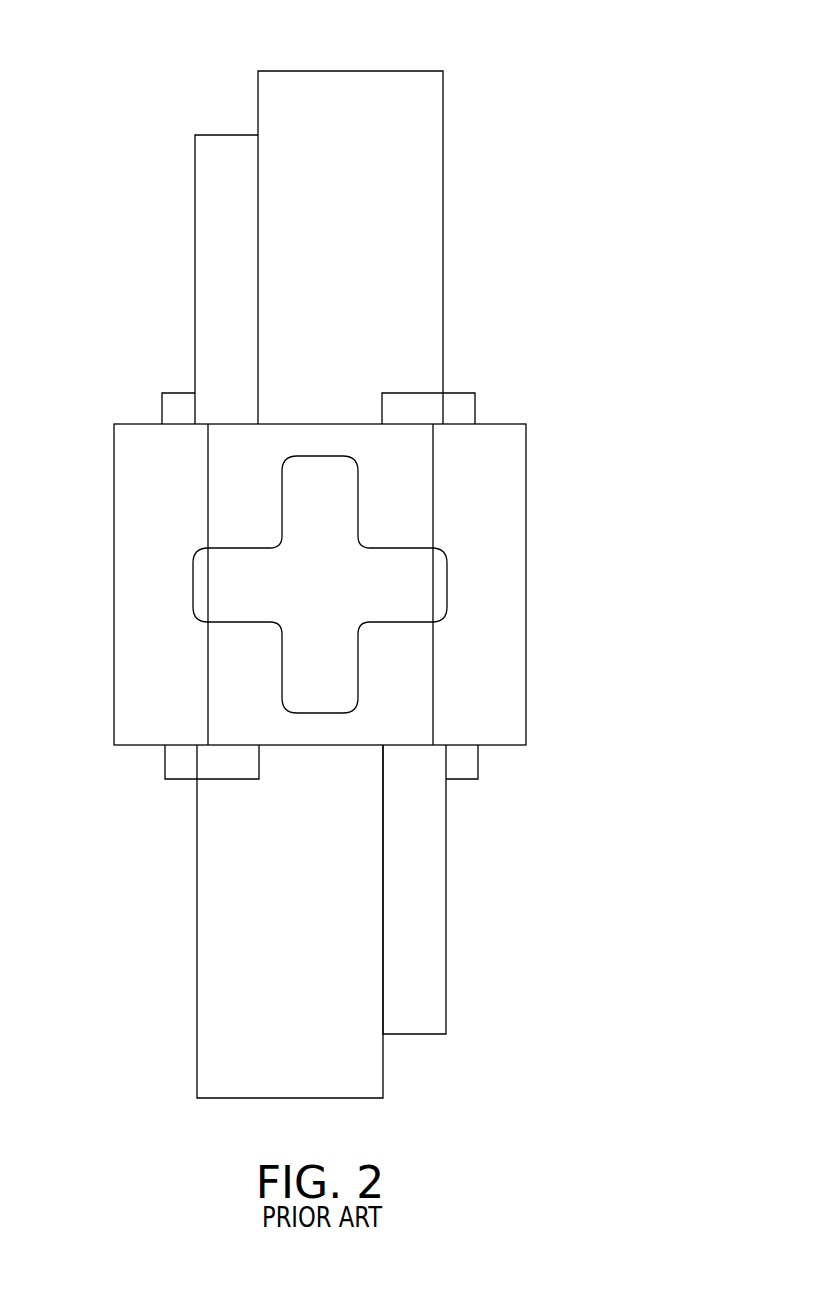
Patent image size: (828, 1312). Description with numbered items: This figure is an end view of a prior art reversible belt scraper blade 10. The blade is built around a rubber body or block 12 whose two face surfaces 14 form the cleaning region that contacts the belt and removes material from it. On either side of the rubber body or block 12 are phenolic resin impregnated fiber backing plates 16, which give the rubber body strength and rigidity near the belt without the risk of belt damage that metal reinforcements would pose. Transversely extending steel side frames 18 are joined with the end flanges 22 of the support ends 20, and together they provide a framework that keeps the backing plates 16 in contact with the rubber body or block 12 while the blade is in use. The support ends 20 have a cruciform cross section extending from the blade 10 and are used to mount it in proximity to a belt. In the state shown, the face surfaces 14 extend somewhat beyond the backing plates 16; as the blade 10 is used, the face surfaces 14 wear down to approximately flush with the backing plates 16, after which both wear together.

The reversible belt scraper blade 10 is at (661, 319).
The rubber body or block 12 is at (432, 252).
The face surfaces 14 is at (415, 71).
The phenolic resin impregnated fiber backing plates 16 is at (208, 252).
The transversely extending steel side frames 18 is at (178, 392).
The support ends 20 is at (208, 621).
The end flanges 22 is at (114, 550).